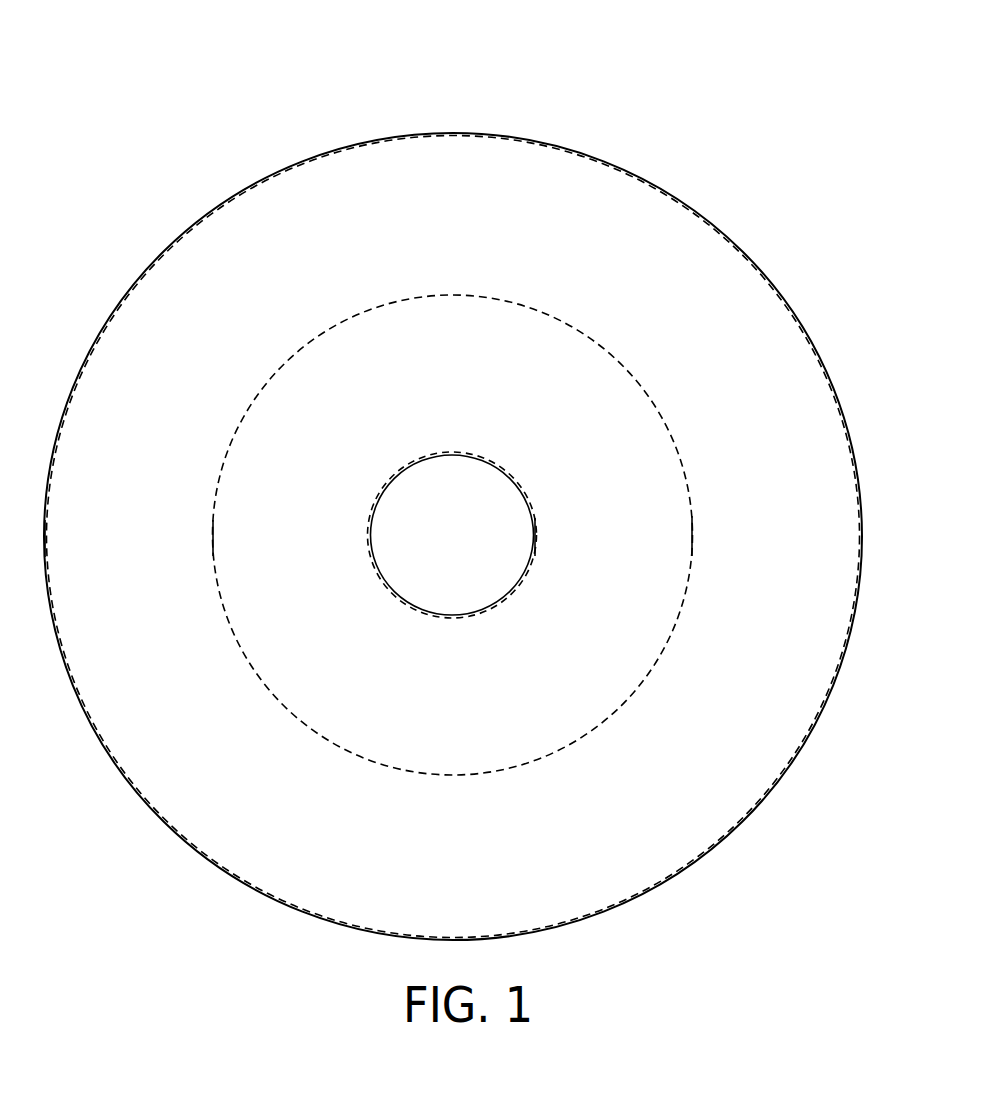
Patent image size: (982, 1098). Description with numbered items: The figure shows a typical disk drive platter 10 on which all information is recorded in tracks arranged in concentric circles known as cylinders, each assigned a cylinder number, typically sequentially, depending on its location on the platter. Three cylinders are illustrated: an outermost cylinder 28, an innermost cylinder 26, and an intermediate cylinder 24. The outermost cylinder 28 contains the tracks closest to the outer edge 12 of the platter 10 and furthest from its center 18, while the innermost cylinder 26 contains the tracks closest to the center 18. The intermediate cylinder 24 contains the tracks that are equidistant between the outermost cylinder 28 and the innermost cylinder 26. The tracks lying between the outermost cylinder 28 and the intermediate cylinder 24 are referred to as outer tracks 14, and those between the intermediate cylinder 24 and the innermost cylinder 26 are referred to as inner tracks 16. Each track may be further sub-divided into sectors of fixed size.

The disk drive platter 10 is at (732, 137).
The outer edge 12 is at (810, 333).
The outer tracks 14 is at (213, 537).
The inner tracks 16 is at (692, 536).
The center 18 is at (405, 492).
The intermediate cylinder 24 is at (498, 771).
The innermost cylinder 26 is at (450, 617).
The outermost cylinder 28 is at (693, 213).